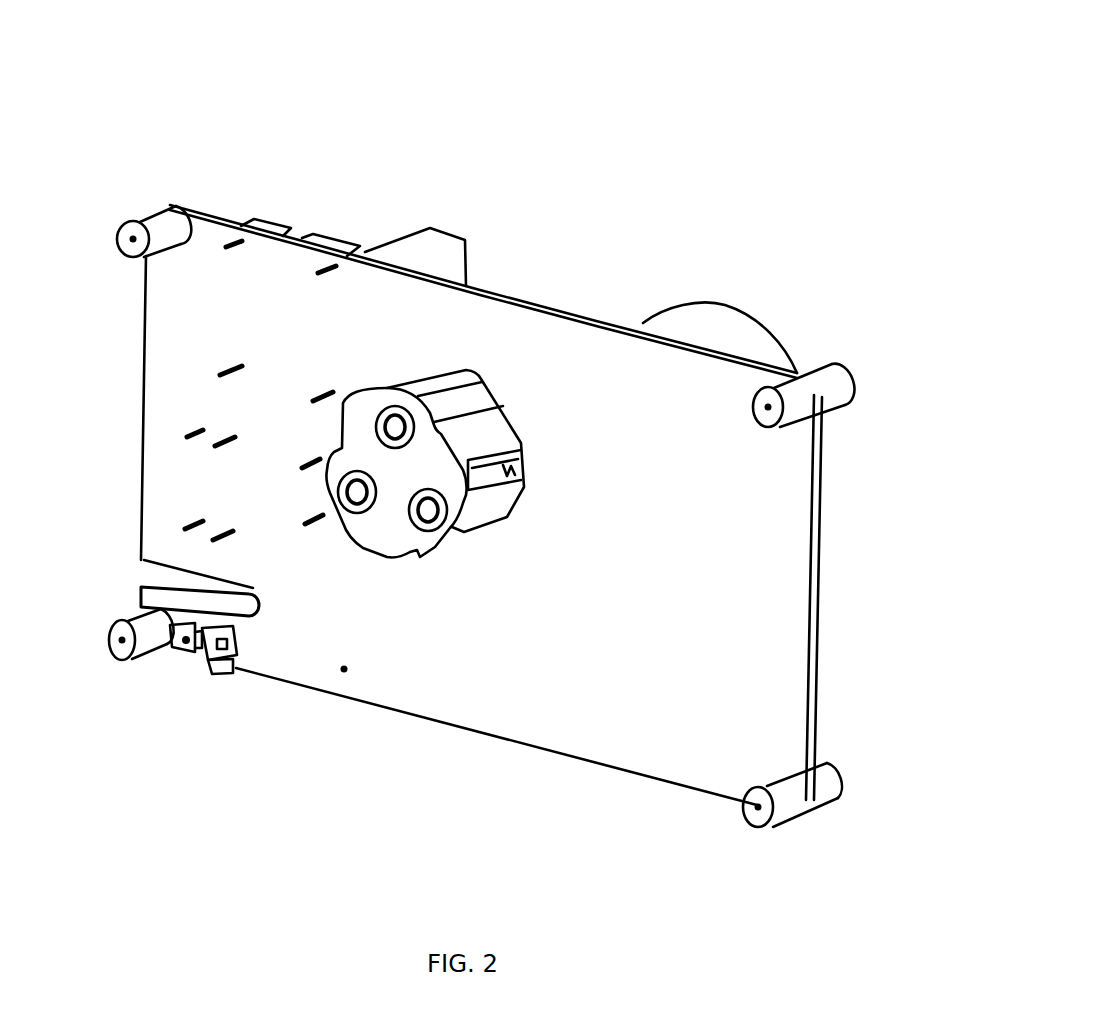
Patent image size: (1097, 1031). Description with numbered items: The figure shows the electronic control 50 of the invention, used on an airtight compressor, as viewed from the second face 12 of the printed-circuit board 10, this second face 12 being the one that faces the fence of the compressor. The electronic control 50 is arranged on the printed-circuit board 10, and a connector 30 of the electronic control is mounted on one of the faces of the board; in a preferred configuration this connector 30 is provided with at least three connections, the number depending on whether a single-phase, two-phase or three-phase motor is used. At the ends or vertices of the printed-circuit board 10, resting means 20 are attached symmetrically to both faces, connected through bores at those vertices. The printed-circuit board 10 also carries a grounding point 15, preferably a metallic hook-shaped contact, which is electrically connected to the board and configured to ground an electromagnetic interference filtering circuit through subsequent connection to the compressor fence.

The printed-circuit board 10 is at (466, 663).
The second face 12 is at (344, 669).
The grounding point 15 is at (212, 663).
The resting means 20 is at (123, 640).
The connector 30 is at (422, 384).
The electronic control 50 is at (668, 212).